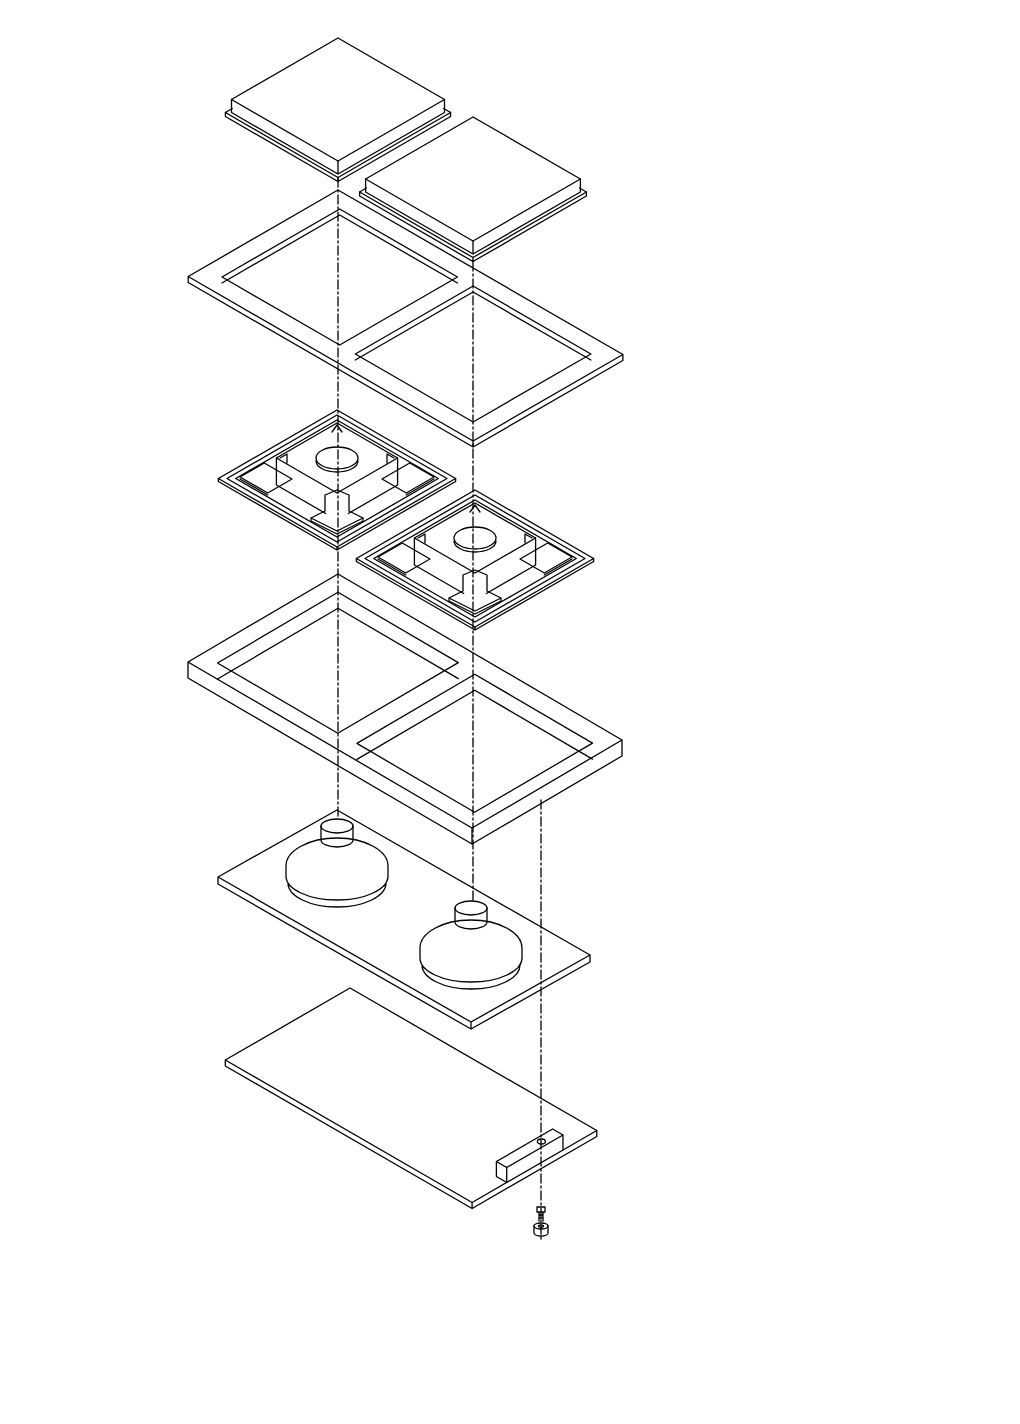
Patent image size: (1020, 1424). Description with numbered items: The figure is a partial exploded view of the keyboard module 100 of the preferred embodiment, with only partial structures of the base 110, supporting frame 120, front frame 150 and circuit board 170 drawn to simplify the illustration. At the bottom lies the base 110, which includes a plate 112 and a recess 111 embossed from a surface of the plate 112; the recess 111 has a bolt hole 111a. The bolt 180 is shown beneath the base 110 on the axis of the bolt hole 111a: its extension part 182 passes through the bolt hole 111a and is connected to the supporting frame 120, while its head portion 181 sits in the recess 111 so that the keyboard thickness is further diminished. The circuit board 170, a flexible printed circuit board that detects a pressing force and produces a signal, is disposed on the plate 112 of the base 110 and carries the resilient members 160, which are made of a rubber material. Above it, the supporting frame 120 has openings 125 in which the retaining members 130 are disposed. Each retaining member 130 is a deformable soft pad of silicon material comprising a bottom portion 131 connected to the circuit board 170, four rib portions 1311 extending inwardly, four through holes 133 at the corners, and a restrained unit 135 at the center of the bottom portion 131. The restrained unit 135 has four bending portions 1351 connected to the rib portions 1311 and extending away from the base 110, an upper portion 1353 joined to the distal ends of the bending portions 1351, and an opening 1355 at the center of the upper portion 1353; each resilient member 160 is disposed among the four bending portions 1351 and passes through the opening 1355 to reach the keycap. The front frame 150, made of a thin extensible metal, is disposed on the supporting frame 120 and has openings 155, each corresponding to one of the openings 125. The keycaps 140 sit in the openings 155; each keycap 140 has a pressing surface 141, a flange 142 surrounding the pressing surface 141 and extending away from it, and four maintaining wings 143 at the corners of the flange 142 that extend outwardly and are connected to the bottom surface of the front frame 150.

The keyboard module 100 is at (100, 46).
The base 110 is at (284, 1024).
The recess 111 is at (562, 1148).
The bolt hole 111a is at (541, 1150).
The plate 112 is at (415, 1130).
The supporting frame 120 is at (207, 649).
The openings 125 is at (553, 752).
The retaining members 130 is at (241, 463).
The bottom portion 131 is at (595, 553).
The rib portions 1311 is at (292, 503).
The through holes 133 is at (550, 553).
The restrained unit 135 is at (526, 519).
The bending portions 1351 is at (504, 571).
The upper portion 1353 is at (508, 533).
The opening 1355 is at (484, 527).
The keycaps 140 is at (243, 86).
The pressing surface 141 is at (510, 150).
The flange 142 is at (535, 212).
The maintaining wings 143 is at (486, 254).
The front frame 150 is at (207, 264).
The openings 155 is at (312, 250).
The resilient members 160 is at (502, 936).
The circuit board 170 is at (274, 841).
The bolts 180 is at (634, 1197).
The head portion 181 is at (547, 1230).
The extension part 182 is at (547, 1213).